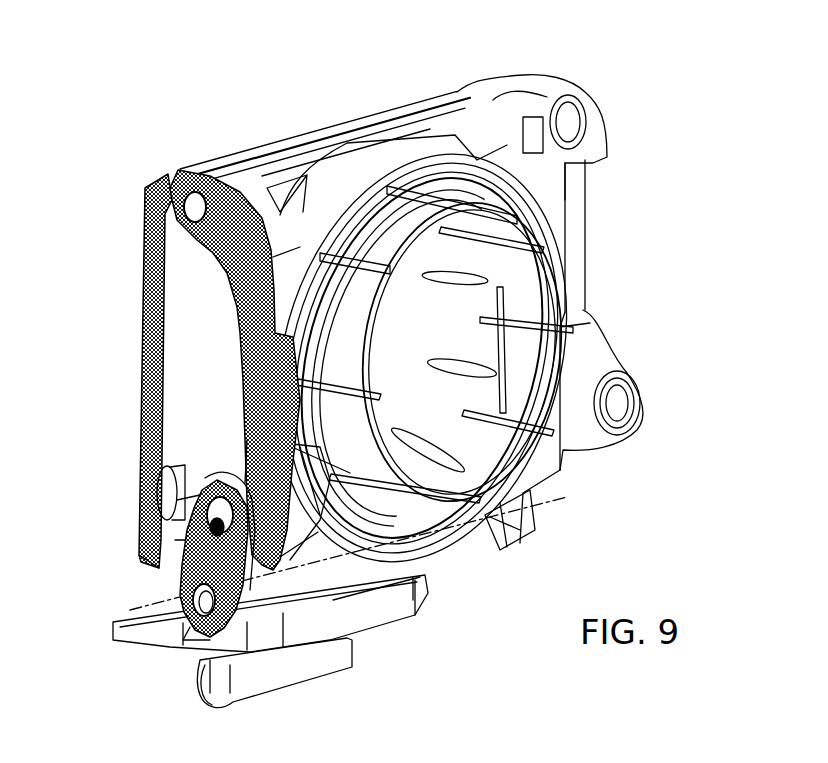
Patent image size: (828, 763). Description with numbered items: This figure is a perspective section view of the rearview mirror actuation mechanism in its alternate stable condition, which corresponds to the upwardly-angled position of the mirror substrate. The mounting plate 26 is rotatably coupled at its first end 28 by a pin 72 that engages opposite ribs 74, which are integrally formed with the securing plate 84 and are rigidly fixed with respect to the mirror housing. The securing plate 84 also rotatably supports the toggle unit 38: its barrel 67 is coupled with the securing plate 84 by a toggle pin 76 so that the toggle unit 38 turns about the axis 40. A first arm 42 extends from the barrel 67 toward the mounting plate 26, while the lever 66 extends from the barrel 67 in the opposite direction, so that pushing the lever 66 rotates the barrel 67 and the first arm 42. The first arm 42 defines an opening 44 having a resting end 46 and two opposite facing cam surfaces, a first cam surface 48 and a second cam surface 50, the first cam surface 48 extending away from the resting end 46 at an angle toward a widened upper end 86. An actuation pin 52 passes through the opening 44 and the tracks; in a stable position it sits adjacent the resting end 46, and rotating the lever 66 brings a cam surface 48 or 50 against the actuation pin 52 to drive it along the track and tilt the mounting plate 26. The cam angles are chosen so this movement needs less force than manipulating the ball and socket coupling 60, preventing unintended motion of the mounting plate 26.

The mounting plate 26 is at (248, 196).
The first end of mounting plate 28 is at (172, 180).
The toggle unit 38 is at (480, 553).
The axis 40 is at (540, 507).
The first arm 42 is at (187, 577).
The opening 44 is at (158, 470).
The resting end 46 is at (137, 555).
The first cam surface 48 is at (187, 507).
The second cam surface 50 is at (247, 435).
The actuation pin 52 is at (187, 533).
The ball and socket coupling 60 is at (540, 290).
The lever 66 is at (313, 673).
The barrel 67 is at (450, 557).
The pin 72 is at (145, 222).
The ribs 74 is at (500, 100).
The toggle pin 76 is at (183, 617).
The securing plate 84 is at (572, 195).
The widened upper end 86 is at (208, 478).